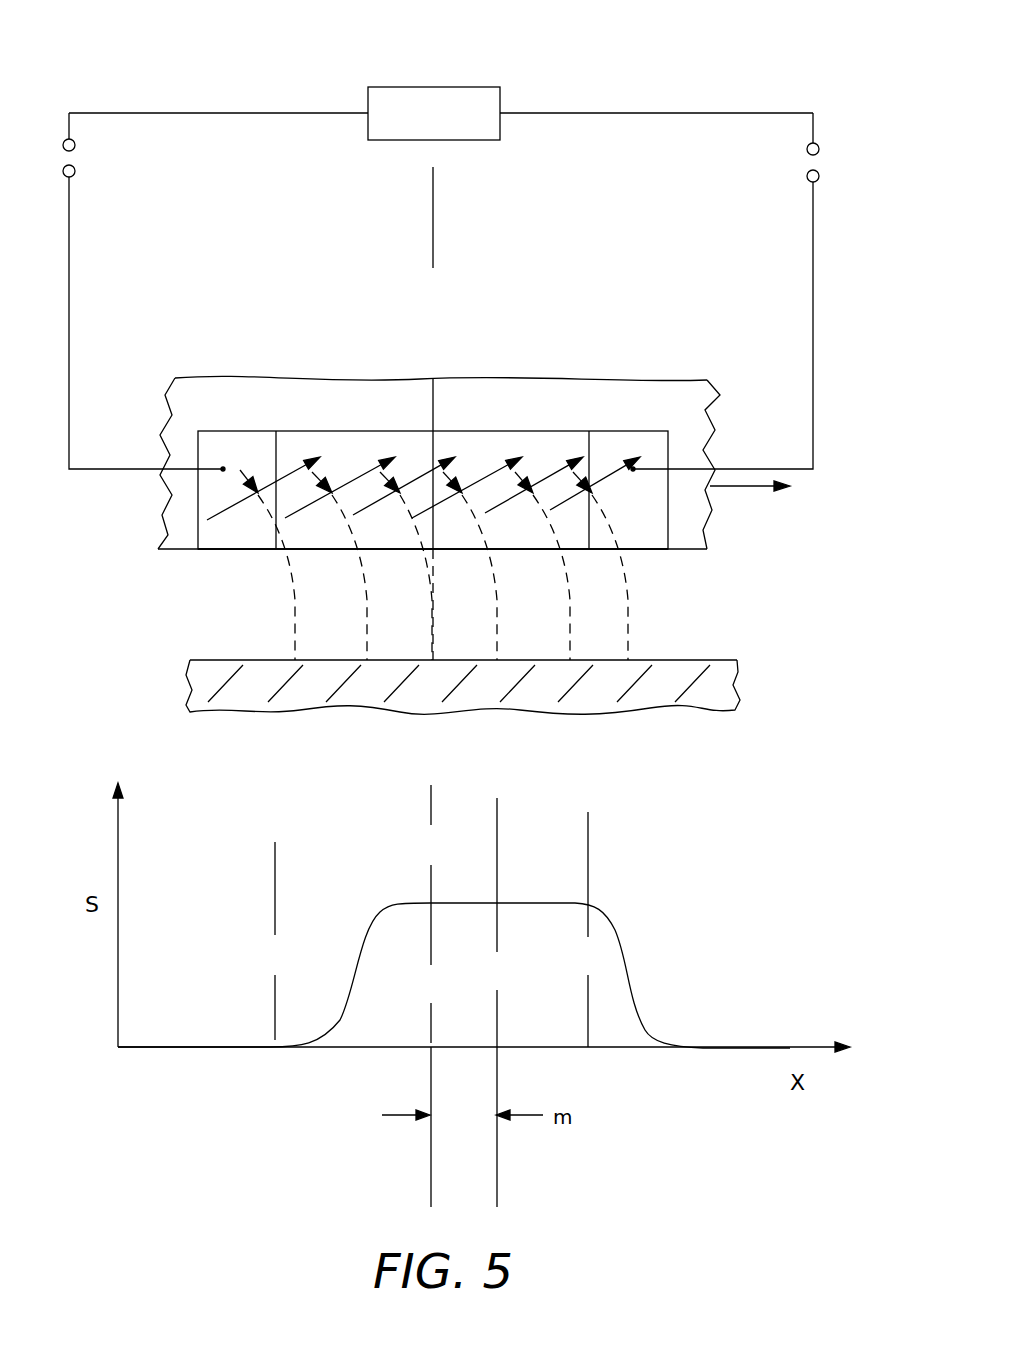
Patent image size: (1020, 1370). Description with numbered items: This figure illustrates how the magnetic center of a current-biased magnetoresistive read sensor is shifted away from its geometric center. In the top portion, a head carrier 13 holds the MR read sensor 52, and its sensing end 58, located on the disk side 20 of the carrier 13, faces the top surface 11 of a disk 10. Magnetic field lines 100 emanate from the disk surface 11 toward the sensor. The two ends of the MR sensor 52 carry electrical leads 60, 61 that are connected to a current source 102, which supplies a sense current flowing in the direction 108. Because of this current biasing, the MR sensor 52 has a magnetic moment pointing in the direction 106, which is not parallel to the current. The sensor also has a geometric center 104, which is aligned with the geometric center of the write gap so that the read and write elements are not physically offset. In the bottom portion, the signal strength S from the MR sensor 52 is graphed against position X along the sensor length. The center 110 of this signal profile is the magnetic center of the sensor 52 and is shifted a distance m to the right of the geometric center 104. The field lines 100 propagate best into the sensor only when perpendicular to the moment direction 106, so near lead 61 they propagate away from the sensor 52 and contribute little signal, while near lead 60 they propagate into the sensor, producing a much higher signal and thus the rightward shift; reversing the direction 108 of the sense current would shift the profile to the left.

The disk 10 is at (730, 693).
The top surface 11 is at (708, 662).
The head carrier 13 is at (194, 378).
The disk side 20 is at (160, 549).
The MR read sensor 52 is at (512, 445).
The sensing end 58 is at (573, 550).
The electrical lead 60 is at (635, 447).
The electrical lead 61 is at (245, 442).
The magnetic field lines 100 is at (290, 616).
The current source 102 is at (455, 87).
The geometric center 104 is at (434, 213).
The moment direction 106 is at (372, 468).
The sense current direction 108 is at (753, 492).
The center of signal profile 110 is at (496, 1173).